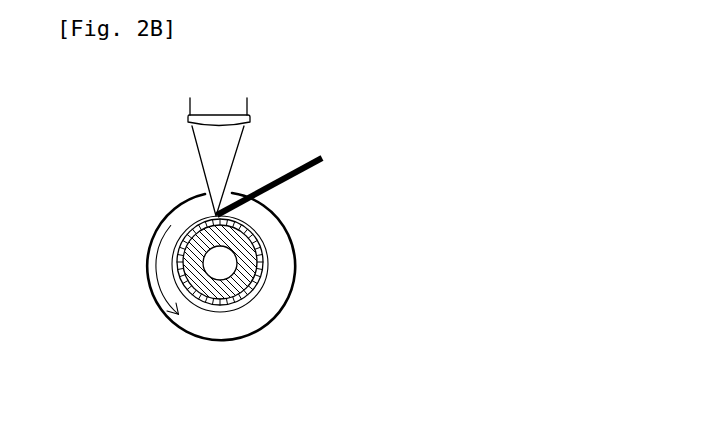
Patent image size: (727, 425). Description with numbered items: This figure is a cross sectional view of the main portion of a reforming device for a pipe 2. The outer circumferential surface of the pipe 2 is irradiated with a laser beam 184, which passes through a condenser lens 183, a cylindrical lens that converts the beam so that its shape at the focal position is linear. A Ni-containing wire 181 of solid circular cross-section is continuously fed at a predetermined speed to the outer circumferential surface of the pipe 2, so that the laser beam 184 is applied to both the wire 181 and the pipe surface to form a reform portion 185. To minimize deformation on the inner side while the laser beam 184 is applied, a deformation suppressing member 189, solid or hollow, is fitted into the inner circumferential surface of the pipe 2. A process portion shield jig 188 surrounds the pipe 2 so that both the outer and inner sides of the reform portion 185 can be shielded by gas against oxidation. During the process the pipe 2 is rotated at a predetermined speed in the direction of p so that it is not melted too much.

The pipe 2 is at (263, 275).
The wire 181 is at (293, 177).
The condenser lens 183 is at (226, 120).
The laser beam 184 is at (215, 163).
The reform portion 185 is at (215, 310).
The process portion shield jig 188 is at (293, 250).
The deformation suppressing member 189 is at (238, 305).
The direction of rotation p is at (157, 255).